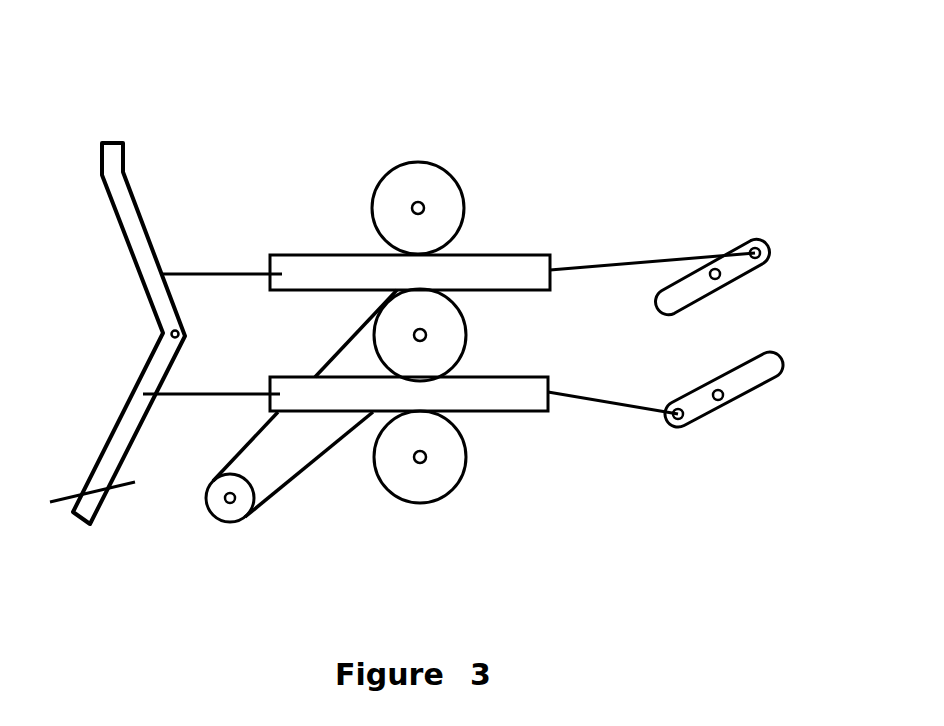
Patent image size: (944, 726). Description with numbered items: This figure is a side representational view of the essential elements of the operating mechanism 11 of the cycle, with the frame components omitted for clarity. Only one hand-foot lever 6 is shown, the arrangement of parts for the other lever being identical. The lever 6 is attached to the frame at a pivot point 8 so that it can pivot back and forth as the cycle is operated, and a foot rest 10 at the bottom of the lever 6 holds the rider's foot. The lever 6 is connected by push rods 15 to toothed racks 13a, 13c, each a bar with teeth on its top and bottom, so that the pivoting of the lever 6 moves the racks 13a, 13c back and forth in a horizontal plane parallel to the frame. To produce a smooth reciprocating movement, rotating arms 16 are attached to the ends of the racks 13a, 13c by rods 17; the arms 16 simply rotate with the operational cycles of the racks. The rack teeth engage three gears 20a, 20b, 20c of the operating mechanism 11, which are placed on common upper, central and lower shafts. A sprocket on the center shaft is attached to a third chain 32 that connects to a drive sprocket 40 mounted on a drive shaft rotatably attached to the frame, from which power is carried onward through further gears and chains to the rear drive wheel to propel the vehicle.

The hand-foot lever 6 is at (113, 208).
The pivot point 8 is at (163, 333).
The foot rest 10 is at (58, 498).
The operating mechanism 11 is at (388, 103).
The rack 13a is at (327, 252).
The rack 13c is at (517, 415).
The push rod 15 is at (245, 272).
The rotating arm 16 is at (758, 235).
The rod 17 is at (605, 260).
The gear 20a is at (465, 212).
The gear 20b is at (467, 358).
The gear 20c is at (460, 480).
The third chain 32 is at (293, 472).
The drive sprocket 40 is at (230, 523).